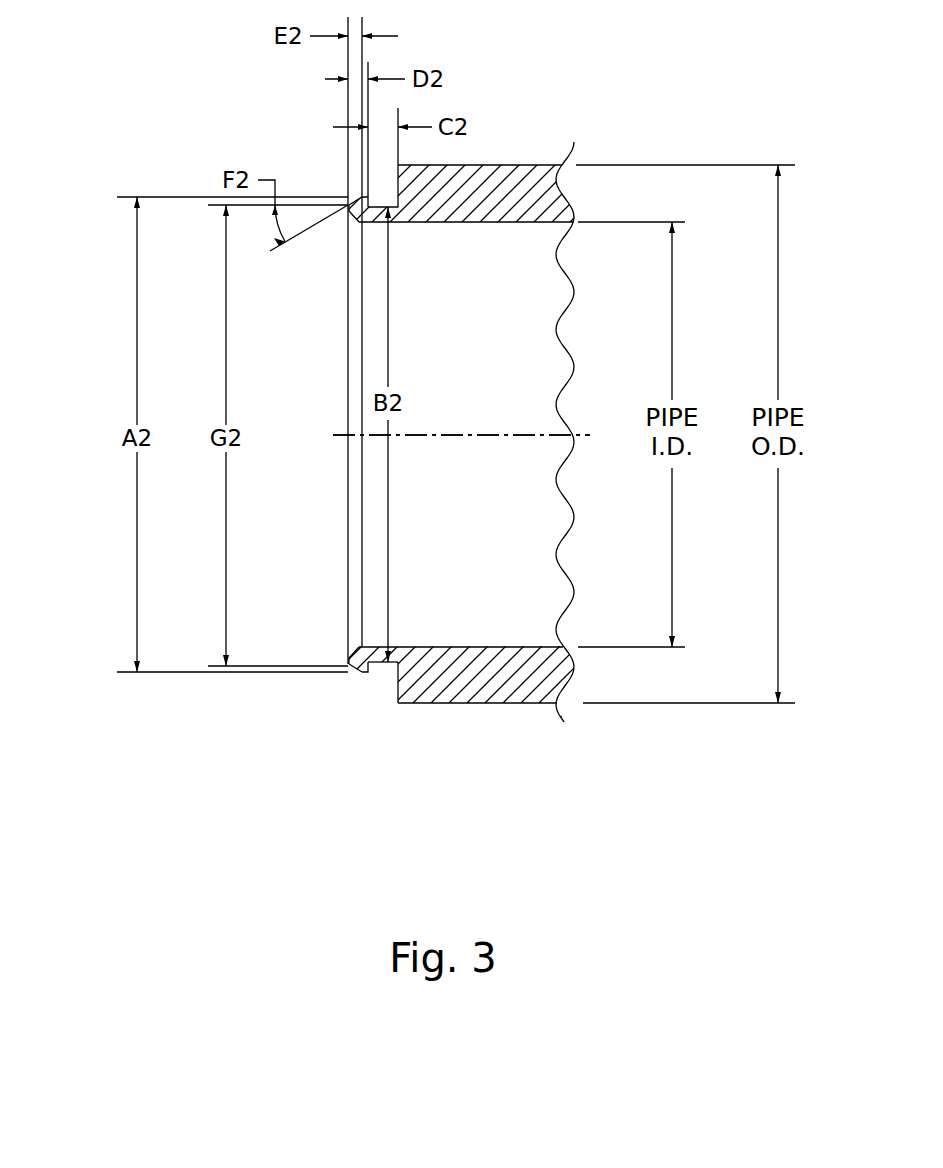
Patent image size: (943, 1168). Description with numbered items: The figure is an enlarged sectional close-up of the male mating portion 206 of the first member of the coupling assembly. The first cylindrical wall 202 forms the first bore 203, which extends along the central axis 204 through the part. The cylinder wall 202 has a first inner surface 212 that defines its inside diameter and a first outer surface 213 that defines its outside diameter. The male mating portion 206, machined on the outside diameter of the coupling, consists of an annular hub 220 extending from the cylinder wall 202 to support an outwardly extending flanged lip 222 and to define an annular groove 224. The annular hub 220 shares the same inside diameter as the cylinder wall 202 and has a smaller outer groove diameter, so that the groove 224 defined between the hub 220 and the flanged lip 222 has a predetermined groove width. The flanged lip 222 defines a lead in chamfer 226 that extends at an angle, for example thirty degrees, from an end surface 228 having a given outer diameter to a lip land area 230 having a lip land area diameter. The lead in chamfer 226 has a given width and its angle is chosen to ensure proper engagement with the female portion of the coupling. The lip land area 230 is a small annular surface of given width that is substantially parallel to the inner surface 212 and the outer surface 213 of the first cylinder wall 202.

The first cylindrical wall 202 is at (513, 180).
The first bore 203 is at (445, 368).
The central axis 204 is at (487, 435).
The male mating portion 206 is at (185, 100).
The first inner surface 212 is at (503, 647).
The first outer surface 213 is at (487, 705).
The annular hub 220 is at (385, 662).
The flanged lip 222 is at (348, 197).
The annular groove 224 is at (396, 676).
The lead in chamfer 226 is at (355, 672).
The end surface 228 is at (347, 660).
The lip land area 230 is at (367, 673).